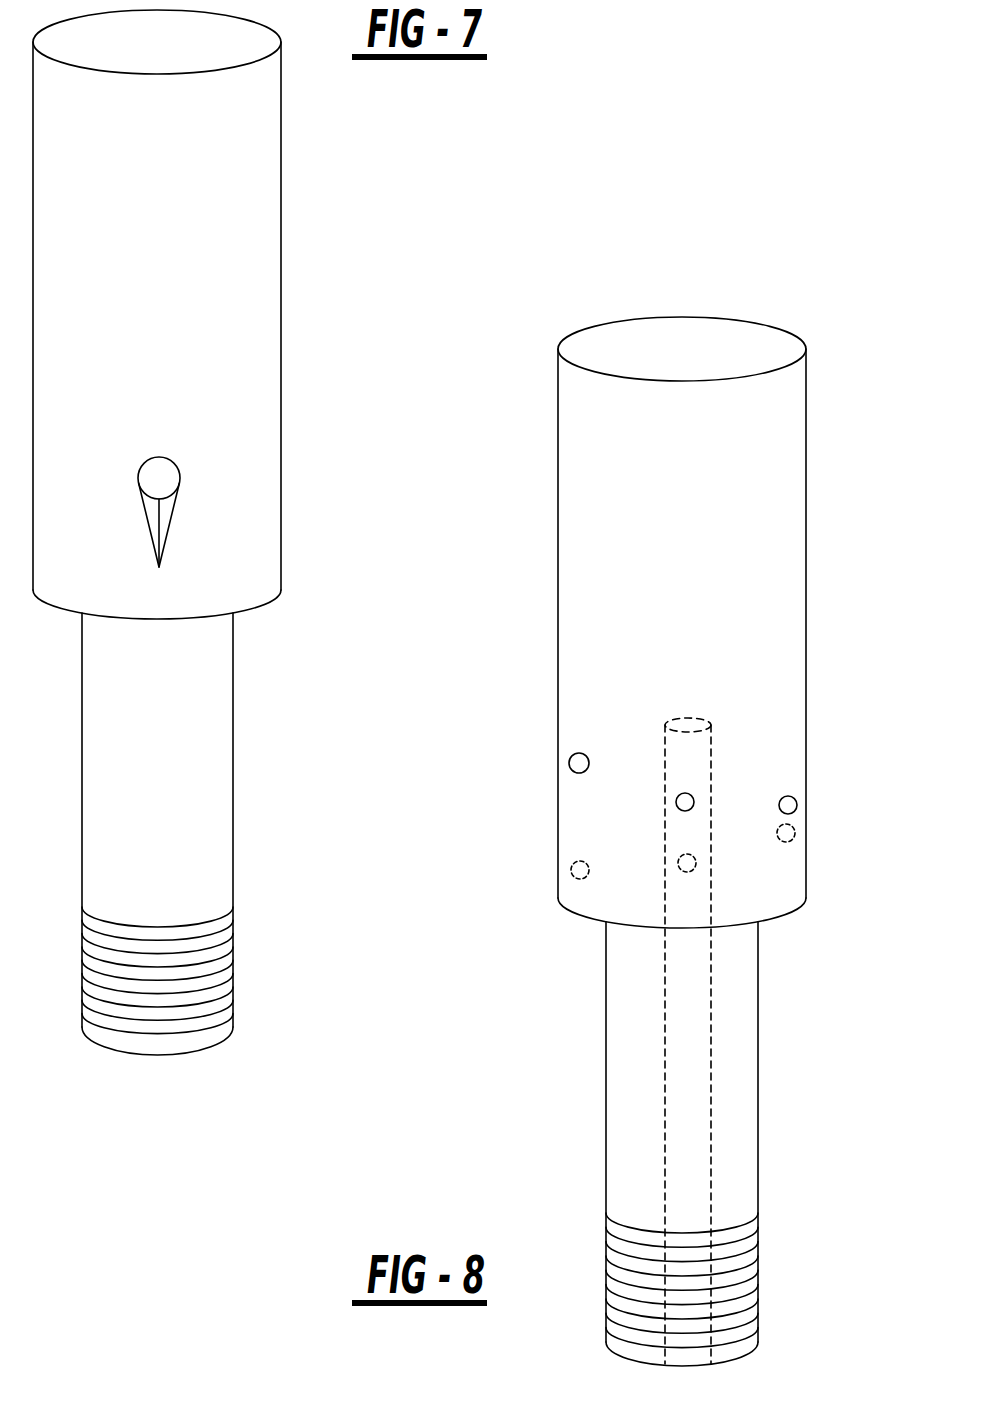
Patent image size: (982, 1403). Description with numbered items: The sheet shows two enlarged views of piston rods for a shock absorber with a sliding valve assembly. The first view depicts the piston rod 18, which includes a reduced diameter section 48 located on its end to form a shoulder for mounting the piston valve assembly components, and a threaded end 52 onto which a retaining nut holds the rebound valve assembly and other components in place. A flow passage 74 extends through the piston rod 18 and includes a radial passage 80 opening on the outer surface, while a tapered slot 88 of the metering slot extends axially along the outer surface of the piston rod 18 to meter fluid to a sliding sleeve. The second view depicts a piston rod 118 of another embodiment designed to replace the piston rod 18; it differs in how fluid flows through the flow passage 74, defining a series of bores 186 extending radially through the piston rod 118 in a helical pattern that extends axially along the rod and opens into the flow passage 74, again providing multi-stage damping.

In FIG. 7, the piston rod 18 is at (160, 339).
In FIG. 7, the reduced diameter section 48 is at (157, 794).
In FIG. 7, the threaded end 52 is at (185, 997).
In FIG. 7, the radial passage 80 is at (163, 470).
In FIG. 7, the tapered slot 88 is at (166, 517).
In FIG. 8, the piston rod 118 is at (682, 542).
In FIG. 8, the bores 186 is at (686, 802).
In FIG. 8, the flow passage 74 is at (695, 1100).